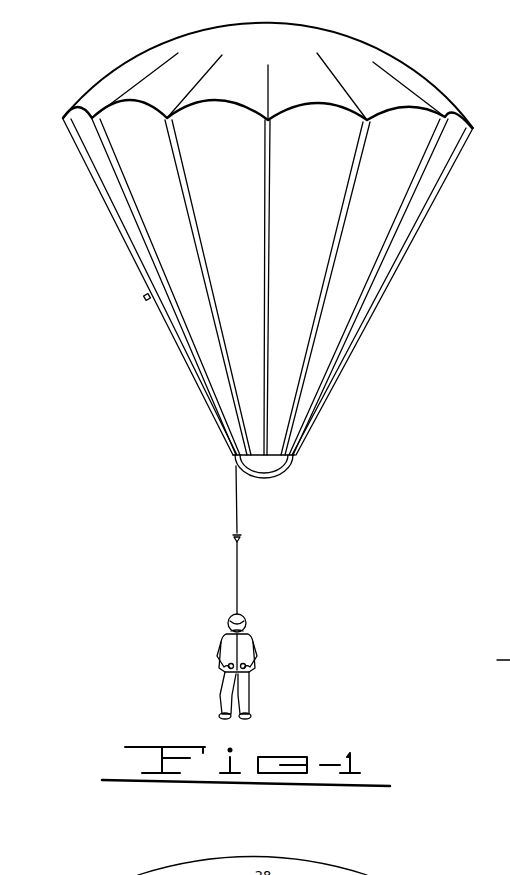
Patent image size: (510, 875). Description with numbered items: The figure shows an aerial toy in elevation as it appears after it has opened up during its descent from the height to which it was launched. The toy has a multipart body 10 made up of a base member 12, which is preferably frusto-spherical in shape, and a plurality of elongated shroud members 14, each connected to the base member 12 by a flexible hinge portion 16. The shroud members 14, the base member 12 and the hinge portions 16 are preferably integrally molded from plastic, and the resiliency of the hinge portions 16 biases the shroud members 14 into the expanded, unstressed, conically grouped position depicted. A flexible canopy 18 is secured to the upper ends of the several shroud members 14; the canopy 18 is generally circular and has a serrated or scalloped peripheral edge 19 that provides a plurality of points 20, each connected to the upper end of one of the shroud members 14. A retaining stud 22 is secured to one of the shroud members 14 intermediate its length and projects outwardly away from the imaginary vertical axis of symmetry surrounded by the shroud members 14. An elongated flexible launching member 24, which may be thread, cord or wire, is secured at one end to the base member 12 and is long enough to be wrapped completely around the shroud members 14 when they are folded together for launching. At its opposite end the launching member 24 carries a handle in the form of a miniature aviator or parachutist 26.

The multipart body 10 is at (377, 312).
The base member 12 is at (281, 467).
The shroud members 14 is at (93, 183).
The flexible hinge portion 16 is at (265, 448).
The flexible canopy 18 is at (263, 50).
The scalloped peripheral edge 19 is at (230, 105).
The points 20 is at (278, 113).
The retaining stud 22 is at (147, 300).
The elongated flexible launching member 24 is at (237, 512).
The miniature aviator or parachutist 26 is at (248, 637).